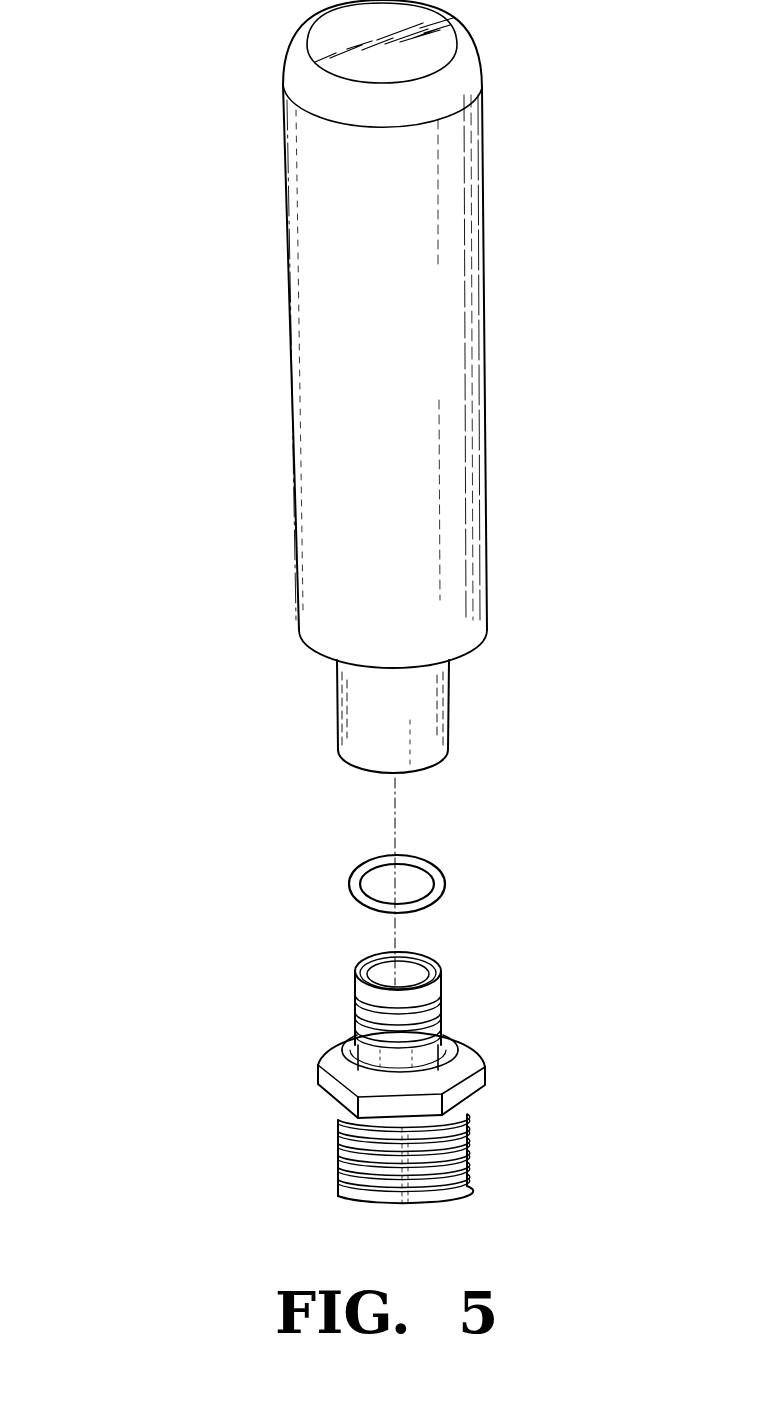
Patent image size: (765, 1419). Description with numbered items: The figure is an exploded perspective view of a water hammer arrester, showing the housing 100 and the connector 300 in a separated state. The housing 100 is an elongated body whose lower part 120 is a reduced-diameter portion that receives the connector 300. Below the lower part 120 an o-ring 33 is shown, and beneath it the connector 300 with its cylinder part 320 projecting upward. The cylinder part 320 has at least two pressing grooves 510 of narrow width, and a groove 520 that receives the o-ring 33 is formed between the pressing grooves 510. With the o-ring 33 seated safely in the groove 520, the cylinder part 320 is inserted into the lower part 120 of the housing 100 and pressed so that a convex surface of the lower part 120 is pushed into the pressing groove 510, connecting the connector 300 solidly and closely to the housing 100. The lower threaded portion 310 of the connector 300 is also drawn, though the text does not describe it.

The housing 100 is at (452, 385).
The lower part 120 is at (420, 710).
The o-ring 33 is at (440, 871).
The connector 300 is at (356, 1069).
The external thread 310 is at (372, 1167).
The cylinder part 320 is at (352, 990).
The pressing groove 510 is at (445, 991).
The groove 520 is at (355, 1022).